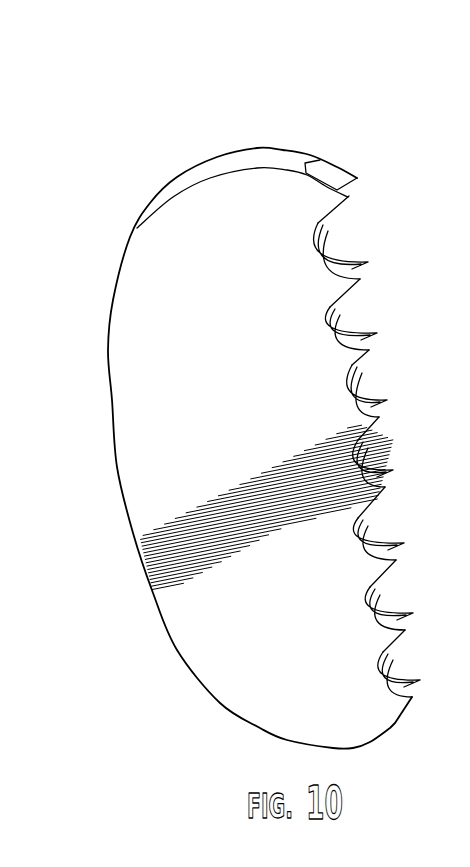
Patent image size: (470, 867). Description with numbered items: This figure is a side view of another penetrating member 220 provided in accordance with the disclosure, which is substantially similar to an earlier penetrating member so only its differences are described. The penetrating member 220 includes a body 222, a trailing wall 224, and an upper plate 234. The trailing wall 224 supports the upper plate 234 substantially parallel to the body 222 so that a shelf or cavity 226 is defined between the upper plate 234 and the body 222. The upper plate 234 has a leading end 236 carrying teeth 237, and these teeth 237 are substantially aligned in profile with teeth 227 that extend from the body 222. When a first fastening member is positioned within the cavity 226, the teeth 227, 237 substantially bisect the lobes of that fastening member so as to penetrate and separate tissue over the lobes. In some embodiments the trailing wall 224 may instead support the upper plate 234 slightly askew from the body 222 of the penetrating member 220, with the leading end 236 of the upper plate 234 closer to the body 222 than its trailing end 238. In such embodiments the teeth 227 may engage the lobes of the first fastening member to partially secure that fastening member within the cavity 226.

The penetrating member 220 is at (356, 141).
The body 222 is at (322, 160).
The trailing wall 224 is at (284, 162).
The cavity 226 is at (323, 177).
The teeth 227 is at (362, 328).
The teeth 237 is at (355, 363).
The leading end 236 is at (368, 532).
The upper plate 234 is at (150, 435).
The trailing end 238 is at (150, 573).